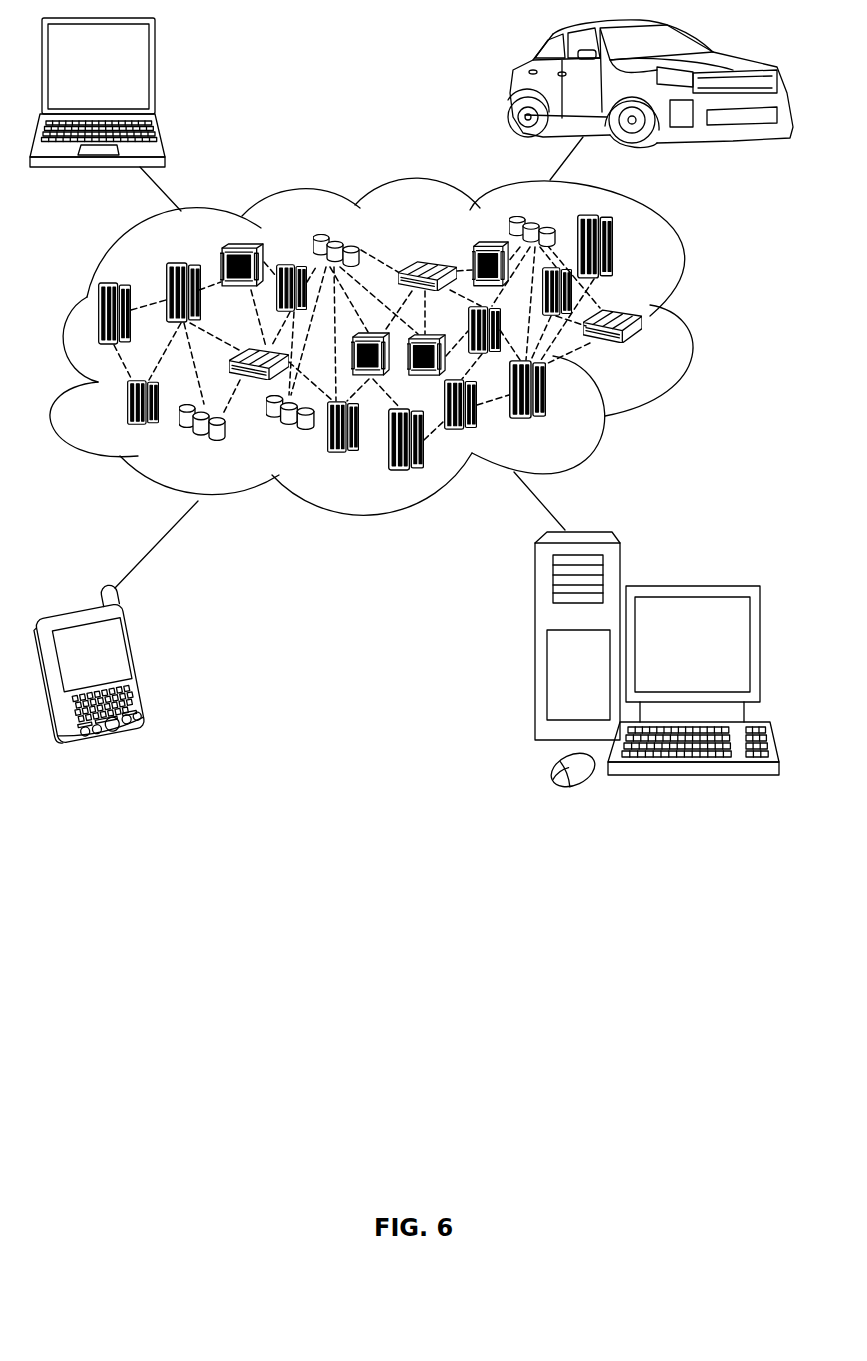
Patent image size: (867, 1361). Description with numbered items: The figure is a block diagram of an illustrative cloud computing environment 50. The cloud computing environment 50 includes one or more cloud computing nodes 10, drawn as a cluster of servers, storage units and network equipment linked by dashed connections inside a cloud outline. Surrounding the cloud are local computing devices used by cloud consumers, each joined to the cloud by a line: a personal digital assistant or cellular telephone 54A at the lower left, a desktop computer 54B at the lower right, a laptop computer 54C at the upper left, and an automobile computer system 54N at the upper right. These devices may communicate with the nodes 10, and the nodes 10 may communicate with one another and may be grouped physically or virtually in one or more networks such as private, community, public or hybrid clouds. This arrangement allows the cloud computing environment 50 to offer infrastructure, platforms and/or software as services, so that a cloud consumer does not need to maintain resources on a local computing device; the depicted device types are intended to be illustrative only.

The cloud computing nodes 10 is at (651, 358).
The cloud computing environment 50 is at (692, 322).
The personal digital assistant (PDA) or cellular telephone 54A is at (146, 668).
The desktop computer 54B is at (697, 584).
The laptop computer 54C is at (155, 72).
The automobile computer system 54N is at (510, 87).